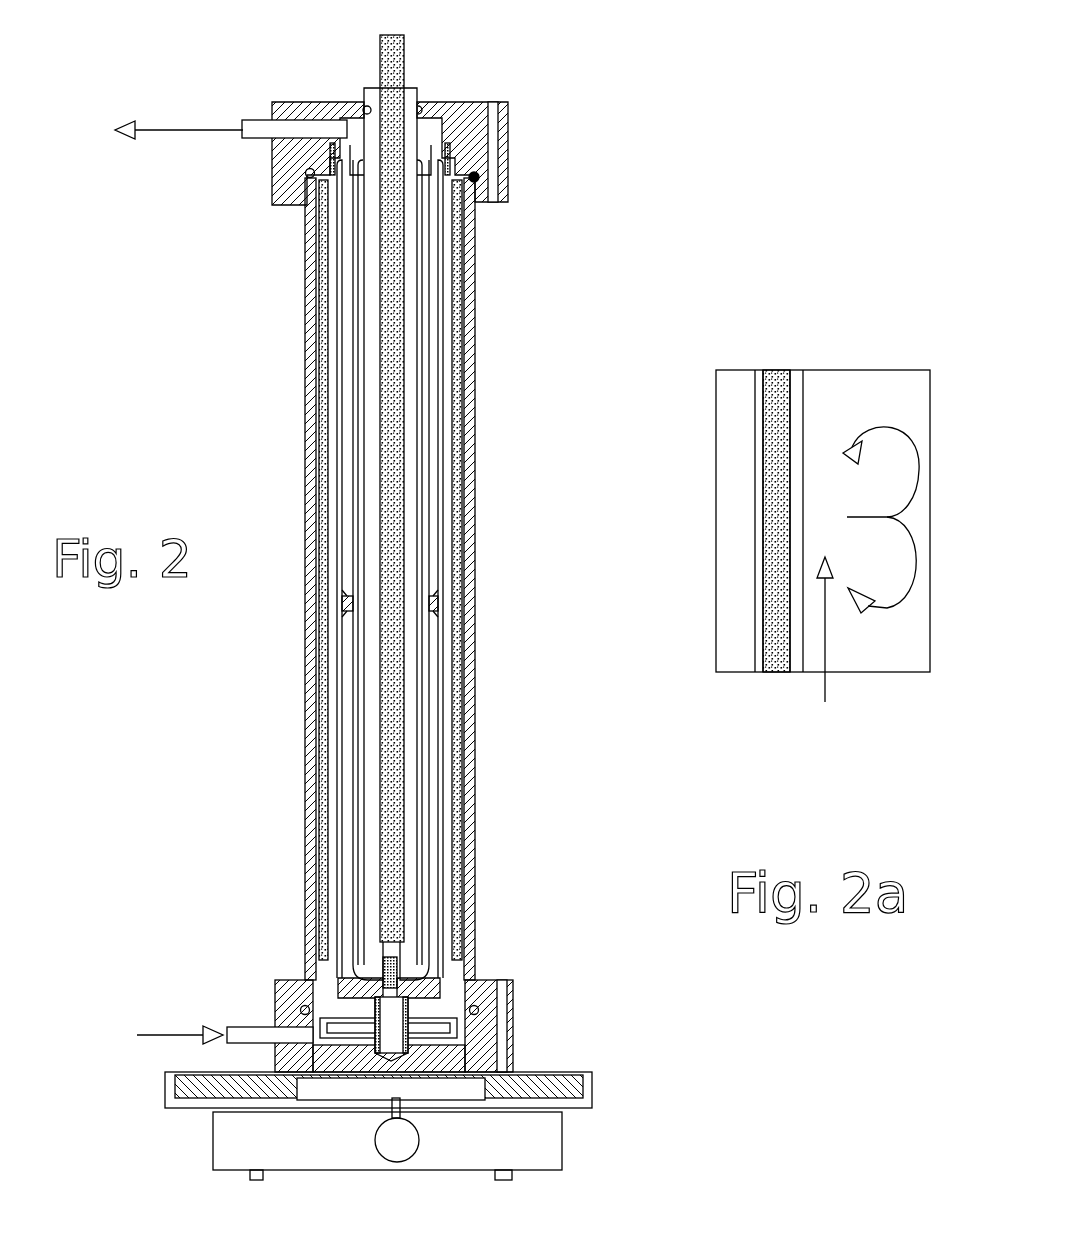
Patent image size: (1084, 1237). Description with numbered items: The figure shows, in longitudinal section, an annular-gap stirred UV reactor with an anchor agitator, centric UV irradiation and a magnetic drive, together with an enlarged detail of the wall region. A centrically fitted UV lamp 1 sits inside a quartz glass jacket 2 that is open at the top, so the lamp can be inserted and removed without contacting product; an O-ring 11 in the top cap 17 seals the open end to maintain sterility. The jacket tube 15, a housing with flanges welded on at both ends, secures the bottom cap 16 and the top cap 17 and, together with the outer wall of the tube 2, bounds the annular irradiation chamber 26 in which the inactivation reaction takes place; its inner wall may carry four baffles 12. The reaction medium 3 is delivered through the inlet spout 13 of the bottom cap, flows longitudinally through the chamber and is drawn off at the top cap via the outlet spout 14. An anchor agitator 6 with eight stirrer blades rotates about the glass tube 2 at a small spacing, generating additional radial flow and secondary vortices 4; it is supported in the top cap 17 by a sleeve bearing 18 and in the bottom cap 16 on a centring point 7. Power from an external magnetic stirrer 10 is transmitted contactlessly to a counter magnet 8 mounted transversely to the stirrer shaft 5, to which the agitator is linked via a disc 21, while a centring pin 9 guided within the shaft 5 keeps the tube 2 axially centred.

In FIG. 2, the UV lamp 1 is at (393, 70).
In FIG. 2, the quartz glass jacket 2 is at (415, 92).
In FIG. 2a, the quartz glass jacket 2 is at (733, 393).
In FIG. 2a, the reaction medium 3 is at (825, 590).
In FIG. 2a, the secondary vortices 4 is at (887, 418).
In FIG. 2, the stirrer shaft 5 is at (412, 1036).
In FIG. 2, the anchor agitator 6 is at (425, 470).
In FIG. 2a, the anchor agitator 6 is at (777, 647).
In FIG. 2, the centring point 7 is at (340, 1052).
In FIG. 2, the counter magnet 8 is at (456, 1028).
In FIG. 2, the centring pin 9 is at (397, 967).
In FIG. 2, the external magnetic stirrer 10 is at (213, 1143).
In FIG. 2, the O-ring 11 is at (361, 102).
In FIG. 2, the baffles 12 is at (467, 348).
In FIG. 2, the inlet spout 13 is at (255, 1033).
In FIG. 2, the outlet spout 14 is at (258, 130).
In FIG. 2, the jacket tube 15 is at (470, 610).
In FIG. 2, the bottom cap 16 is at (283, 1053).
In FIG. 2, the top cap 17 is at (442, 125).
In FIG. 2, the sleeve bearing 18 is at (450, 158).
In FIG. 2, the disc 21 is at (343, 982).
In FIG. 2, the irradiation chamber 26 is at (356, 715).
In FIG. 2a, the irradiation chamber 26 is at (845, 398).